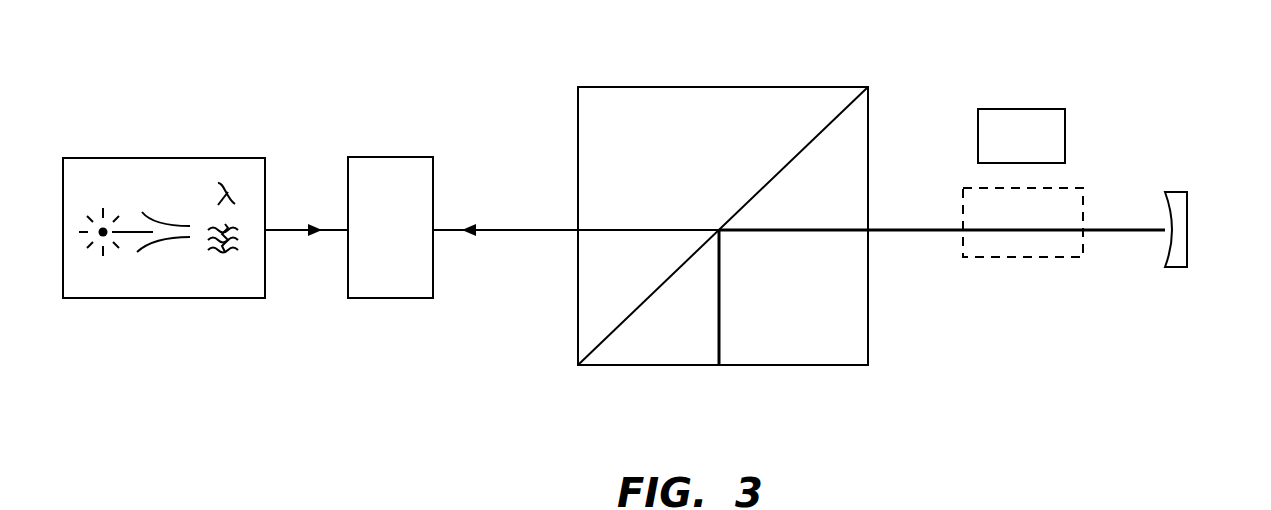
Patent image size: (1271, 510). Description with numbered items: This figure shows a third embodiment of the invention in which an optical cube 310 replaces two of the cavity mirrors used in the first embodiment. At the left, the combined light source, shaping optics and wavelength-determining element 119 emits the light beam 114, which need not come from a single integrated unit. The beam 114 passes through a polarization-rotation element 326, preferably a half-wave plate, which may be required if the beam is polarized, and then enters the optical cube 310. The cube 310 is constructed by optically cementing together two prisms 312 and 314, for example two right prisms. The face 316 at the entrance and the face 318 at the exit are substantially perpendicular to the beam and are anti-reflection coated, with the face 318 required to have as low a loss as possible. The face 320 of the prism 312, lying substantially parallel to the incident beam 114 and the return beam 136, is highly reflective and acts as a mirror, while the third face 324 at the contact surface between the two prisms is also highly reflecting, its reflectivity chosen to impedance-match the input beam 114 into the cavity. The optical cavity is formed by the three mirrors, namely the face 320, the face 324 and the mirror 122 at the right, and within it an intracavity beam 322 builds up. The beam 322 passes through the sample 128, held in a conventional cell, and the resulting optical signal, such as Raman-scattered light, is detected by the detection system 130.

The combined light source, shaping optics and wavelength-determining element 119 is at (145, 158).
The light beam 114 is at (298, 233).
The polarization-rotation element 326 is at (367, 157).
The return beam 136 is at (487, 233).
The optical cube 310 is at (668, 62).
The face 316 is at (578, 140).
The prism 314 is at (766, 77).
The face 318 is at (868, 163).
The face 320 is at (648, 367).
The third face 324 is at (837, 117).
The prism 312 is at (878, 332).
The intracavity beam 322 is at (1125, 228).
The detection system 130 is at (1066, 130).
The sample 128 is at (1030, 257).
The mirror 122 is at (1188, 208).